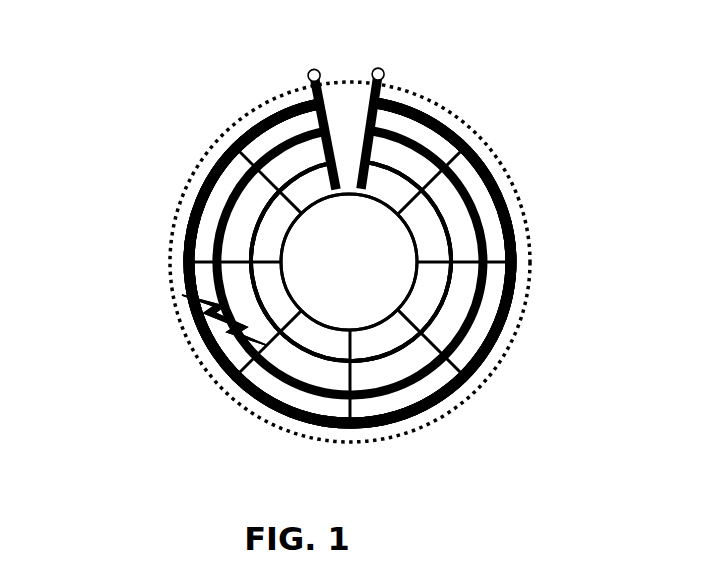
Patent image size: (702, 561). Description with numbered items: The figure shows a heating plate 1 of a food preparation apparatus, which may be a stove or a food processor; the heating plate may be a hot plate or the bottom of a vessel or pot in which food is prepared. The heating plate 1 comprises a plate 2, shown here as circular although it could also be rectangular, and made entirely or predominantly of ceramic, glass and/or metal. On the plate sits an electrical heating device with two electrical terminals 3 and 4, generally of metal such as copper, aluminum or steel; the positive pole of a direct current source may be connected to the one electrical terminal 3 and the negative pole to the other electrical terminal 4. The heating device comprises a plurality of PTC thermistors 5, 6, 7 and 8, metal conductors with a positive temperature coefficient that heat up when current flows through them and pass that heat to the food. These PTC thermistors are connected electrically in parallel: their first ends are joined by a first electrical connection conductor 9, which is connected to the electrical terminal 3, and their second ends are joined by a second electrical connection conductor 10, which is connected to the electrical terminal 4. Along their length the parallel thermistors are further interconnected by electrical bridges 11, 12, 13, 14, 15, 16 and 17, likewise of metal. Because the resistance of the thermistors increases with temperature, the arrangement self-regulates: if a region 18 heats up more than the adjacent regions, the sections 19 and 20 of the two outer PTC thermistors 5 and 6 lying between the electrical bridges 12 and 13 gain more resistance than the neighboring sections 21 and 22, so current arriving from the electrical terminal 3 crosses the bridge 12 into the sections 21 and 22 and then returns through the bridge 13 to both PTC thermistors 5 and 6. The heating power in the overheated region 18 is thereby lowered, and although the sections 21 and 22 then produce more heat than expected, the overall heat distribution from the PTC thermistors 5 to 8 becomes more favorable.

The heating plate 1 is at (108, 75).
The plate 2 is at (177, 206).
The electrical terminal 3 is at (313, 69).
The electrical terminal 4 is at (379, 69).
The PTC thermistor 5 is at (268, 413).
The PTC thermistor 6 is at (374, 400).
The PTC thermistor 7 is at (453, 300).
The PTC thermistor 8 is at (437, 215).
The first electrical connection conductor 9 is at (317, 129).
The second electrical connection conductor 10 is at (380, 124).
The electrical bridge 11 is at (244, 190).
The electrical bridge 12 is at (233, 262).
The electrical bridge 13 is at (247, 367).
The electrical bridge 14 is at (332, 355).
The electrical bridge 15 is at (450, 340).
The electrical bridge 16 is at (502, 259).
The electrical bridge 17 is at (455, 165).
The region 18 is at (187, 300).
The section 19 is at (188, 287).
The section 20 is at (237, 347).
The section 21 is at (258, 285).
The section 22 is at (295, 297).